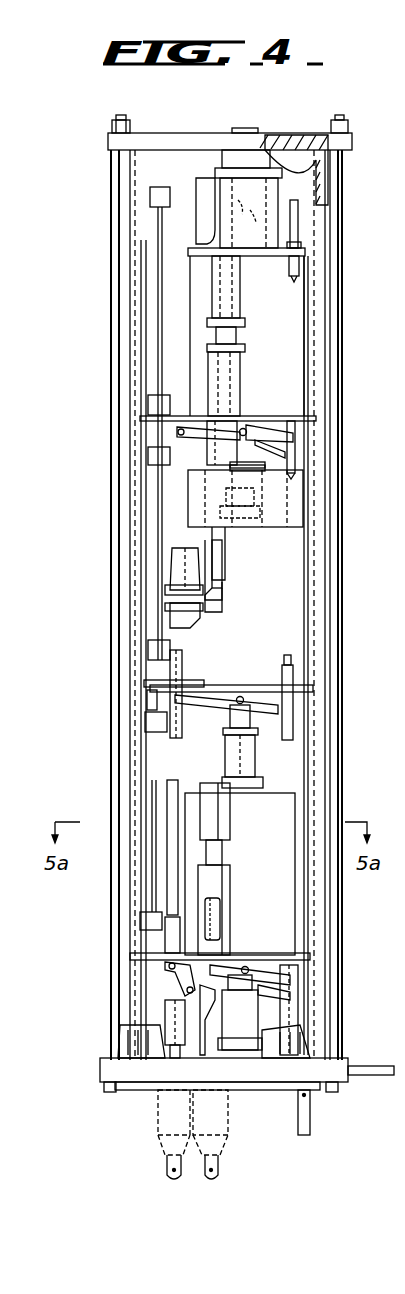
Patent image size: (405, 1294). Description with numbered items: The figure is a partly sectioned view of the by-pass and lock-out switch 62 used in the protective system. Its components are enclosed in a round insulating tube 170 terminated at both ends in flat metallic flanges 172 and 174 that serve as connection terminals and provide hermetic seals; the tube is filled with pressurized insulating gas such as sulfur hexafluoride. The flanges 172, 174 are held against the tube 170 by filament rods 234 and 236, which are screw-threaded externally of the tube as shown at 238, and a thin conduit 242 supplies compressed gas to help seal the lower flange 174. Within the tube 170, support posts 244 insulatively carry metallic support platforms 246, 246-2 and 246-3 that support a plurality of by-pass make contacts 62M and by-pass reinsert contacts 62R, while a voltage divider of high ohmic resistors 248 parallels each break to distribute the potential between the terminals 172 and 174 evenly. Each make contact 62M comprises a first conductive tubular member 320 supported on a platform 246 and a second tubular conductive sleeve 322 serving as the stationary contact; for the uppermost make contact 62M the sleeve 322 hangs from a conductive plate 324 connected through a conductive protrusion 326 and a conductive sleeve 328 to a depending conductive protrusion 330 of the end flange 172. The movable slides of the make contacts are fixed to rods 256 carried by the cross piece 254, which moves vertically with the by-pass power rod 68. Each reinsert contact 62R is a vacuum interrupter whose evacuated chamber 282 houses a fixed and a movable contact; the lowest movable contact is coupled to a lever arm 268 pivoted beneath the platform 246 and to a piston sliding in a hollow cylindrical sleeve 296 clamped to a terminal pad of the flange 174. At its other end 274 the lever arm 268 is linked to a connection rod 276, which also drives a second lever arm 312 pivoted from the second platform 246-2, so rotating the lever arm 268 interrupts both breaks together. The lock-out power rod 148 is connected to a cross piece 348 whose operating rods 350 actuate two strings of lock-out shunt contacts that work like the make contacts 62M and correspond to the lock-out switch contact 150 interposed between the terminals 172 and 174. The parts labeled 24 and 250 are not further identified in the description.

The rod 24 is at (300, 228).
The lift assembly 62 is at (345, 485).
The by-pass make contact 62M is at (256, 355).
The by-pass reinsert contact 62R is at (308, 330).
The by-pass power rod 68 is at (218, 1170).
The lock-out power rod 148 is at (167, 1170).
The lock-out switch contact 150 is at (148, 605).
The insulating tube 170 is at (332, 385).
The upper flange 172 is at (108, 142).
The lower flange 174 is at (106, 1070).
The filament rod 234 is at (342, 268).
The filament rod 236 is at (111, 288).
The screw threading 238 is at (339, 128).
The thin conduit 242 is at (298, 1130).
The support post 244 is at (295, 732).
The support platform 246 is at (248, 953).
The second support platform 246-2 is at (200, 686).
The third cross plate 246-3 is at (298, 412).
The resistor 248 is at (140, 333).
The lower cylinder 250 is at (228, 1132).
The cross piece 254 is at (198, 1049).
The rod 256 is at (160, 372).
The lever arm 268 is at (292, 988).
The end of lever arm 274 is at (158, 922).
The connection rod 276 is at (180, 497).
The evacuated chamber 282 is at (308, 408).
The hollow cylindrical sleeve 296 is at (310, 1032).
The second lever arm 312 is at (296, 440).
The first conductive tubular member 320 is at (240, 382).
The second tubular conductive sleeve 322 is at (238, 294).
The conductive plate 324 is at (220, 240).
The conductive protrusion 326 is at (224, 204).
The conductive sleeve 328 is at (220, 182).
The depending conductive protrusion 330 is at (232, 152).
The cross piece 348 is at (165, 1012).
The operating rod 350 is at (176, 592).